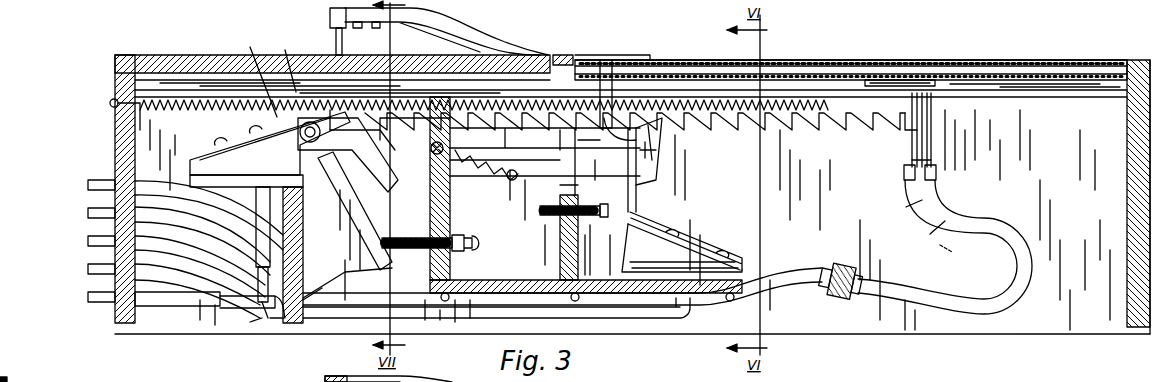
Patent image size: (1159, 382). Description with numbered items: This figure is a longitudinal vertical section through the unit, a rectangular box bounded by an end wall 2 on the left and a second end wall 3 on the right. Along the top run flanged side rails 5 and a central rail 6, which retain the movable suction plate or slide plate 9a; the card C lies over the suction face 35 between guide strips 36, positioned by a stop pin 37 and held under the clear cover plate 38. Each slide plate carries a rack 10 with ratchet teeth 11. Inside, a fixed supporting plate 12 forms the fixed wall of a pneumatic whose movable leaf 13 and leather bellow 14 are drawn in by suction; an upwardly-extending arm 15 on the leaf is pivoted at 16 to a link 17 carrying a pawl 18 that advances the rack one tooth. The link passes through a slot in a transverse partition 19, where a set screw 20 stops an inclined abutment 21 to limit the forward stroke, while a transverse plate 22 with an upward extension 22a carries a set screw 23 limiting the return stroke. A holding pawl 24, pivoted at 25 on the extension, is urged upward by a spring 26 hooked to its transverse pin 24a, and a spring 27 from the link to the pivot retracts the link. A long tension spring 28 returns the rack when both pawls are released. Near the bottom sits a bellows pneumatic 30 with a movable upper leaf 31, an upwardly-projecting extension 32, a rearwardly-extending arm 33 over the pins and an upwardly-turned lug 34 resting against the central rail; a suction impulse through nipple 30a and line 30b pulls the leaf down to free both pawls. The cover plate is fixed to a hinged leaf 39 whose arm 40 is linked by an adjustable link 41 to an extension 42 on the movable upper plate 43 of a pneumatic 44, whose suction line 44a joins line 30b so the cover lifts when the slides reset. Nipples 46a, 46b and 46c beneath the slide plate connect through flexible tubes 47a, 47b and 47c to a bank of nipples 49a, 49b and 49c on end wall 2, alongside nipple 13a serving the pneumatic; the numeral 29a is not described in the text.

The end wall 2 is at (115, 145).
The second end wall 3 is at (1135, 327).
The side rails 5 is at (135, 82).
The central rail 6 is at (283, 63).
The slide plate 9a is at (935, 86).
The rack 10 is at (635, 133).
The ratchet teeth 11 is at (856, 133).
The fixed supporting plate 12 is at (293, 323).
The movable leaf 13 is at (380, 270).
The nipple 13a is at (88, 188).
The leather bellow 14 is at (347, 284).
The upwardly-extending arm 15 is at (325, 150).
The pivot 16 is at (300, 140).
The link 17 is at (430, 185).
The pawl 18 is at (656, 136).
The transverse partition 19 is at (545, 196).
The set screw 20 is at (582, 230).
The abutment 21 is at (492, 220).
The transverse plate 22 is at (465, 252).
The extension 22a is at (415, 129).
The set screw 23 is at (458, 236).
The holding pawl 24 is at (545, 132).
The transverse pin 24a is at (596, 162).
The pivot 25 is at (431, 148).
The spring 26 is at (548, 145).
The spring 27 is at (495, 172).
The tension spring 28 is at (232, 110).
The conduit fitting 29a is at (262, 322).
The pneumatic 30 is at (586, 262).
The nipple 30a is at (88, 305).
The line 30b is at (192, 320).
The movable upper leaf 31 is at (670, 232).
The upwardly-projecting extension 32 is at (640, 176).
The rearwardly-extending arm 33 is at (656, 156).
The upwardly-turned lug 34 is at (608, 66).
The suction face 35 is at (1090, 78).
The guide strip 36 is at (1120, 66).
The stop pin 37 is at (660, 68).
The cover plate 38 is at (882, 64).
The hinged leaf 39 is at (563, 55).
The rearwardly-extending arm 40 is at (500, 32).
The link 41 is at (336, 40).
The extension 42 is at (248, 78).
The movable upper plate 43 is at (200, 160).
The pneumatic 44 is at (256, 198).
The suction line 44a is at (258, 245).
The nipple 46a is at (912, 152).
The nipple 46b is at (912, 166).
The nipple 46c is at (905, 192).
The flexible tube 47a is at (912, 220).
The flexible tube 47b is at (936, 246).
The flexible tube 47c is at (1002, 238).
The nipple 49a is at (88, 219).
The nipple 49b is at (88, 247).
The nipple 49c is at (88, 275).
The card C is at (962, 66).